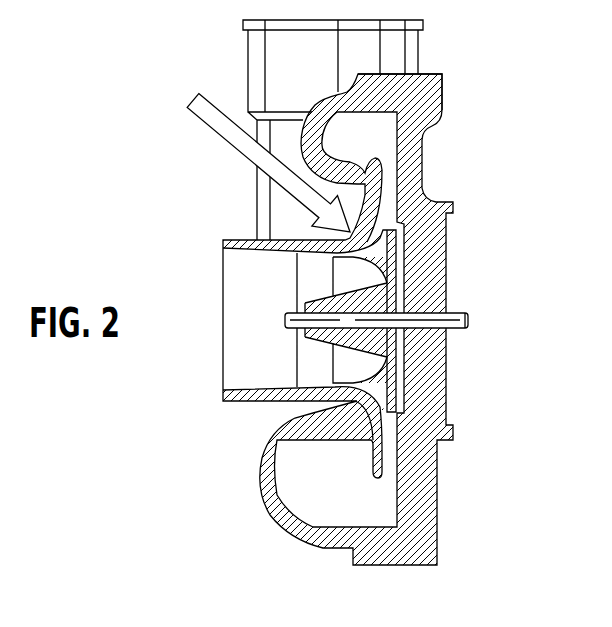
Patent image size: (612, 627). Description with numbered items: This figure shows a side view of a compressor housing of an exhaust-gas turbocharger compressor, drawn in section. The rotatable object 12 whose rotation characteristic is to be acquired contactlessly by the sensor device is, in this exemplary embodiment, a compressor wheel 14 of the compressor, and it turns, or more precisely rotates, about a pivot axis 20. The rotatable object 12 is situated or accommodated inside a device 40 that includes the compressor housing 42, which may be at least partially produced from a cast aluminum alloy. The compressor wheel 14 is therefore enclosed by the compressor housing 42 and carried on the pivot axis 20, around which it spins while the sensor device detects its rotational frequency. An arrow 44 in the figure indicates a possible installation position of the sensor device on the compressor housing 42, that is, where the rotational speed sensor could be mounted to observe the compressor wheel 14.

The rotatable object 12 is at (388, 292).
The compressor wheel 14 is at (388, 347).
The pivot axis 20 is at (470, 320).
The device 40 is at (440, 60).
The compressor housing 42 is at (417, 99).
The arrow 44 is at (268, 165).